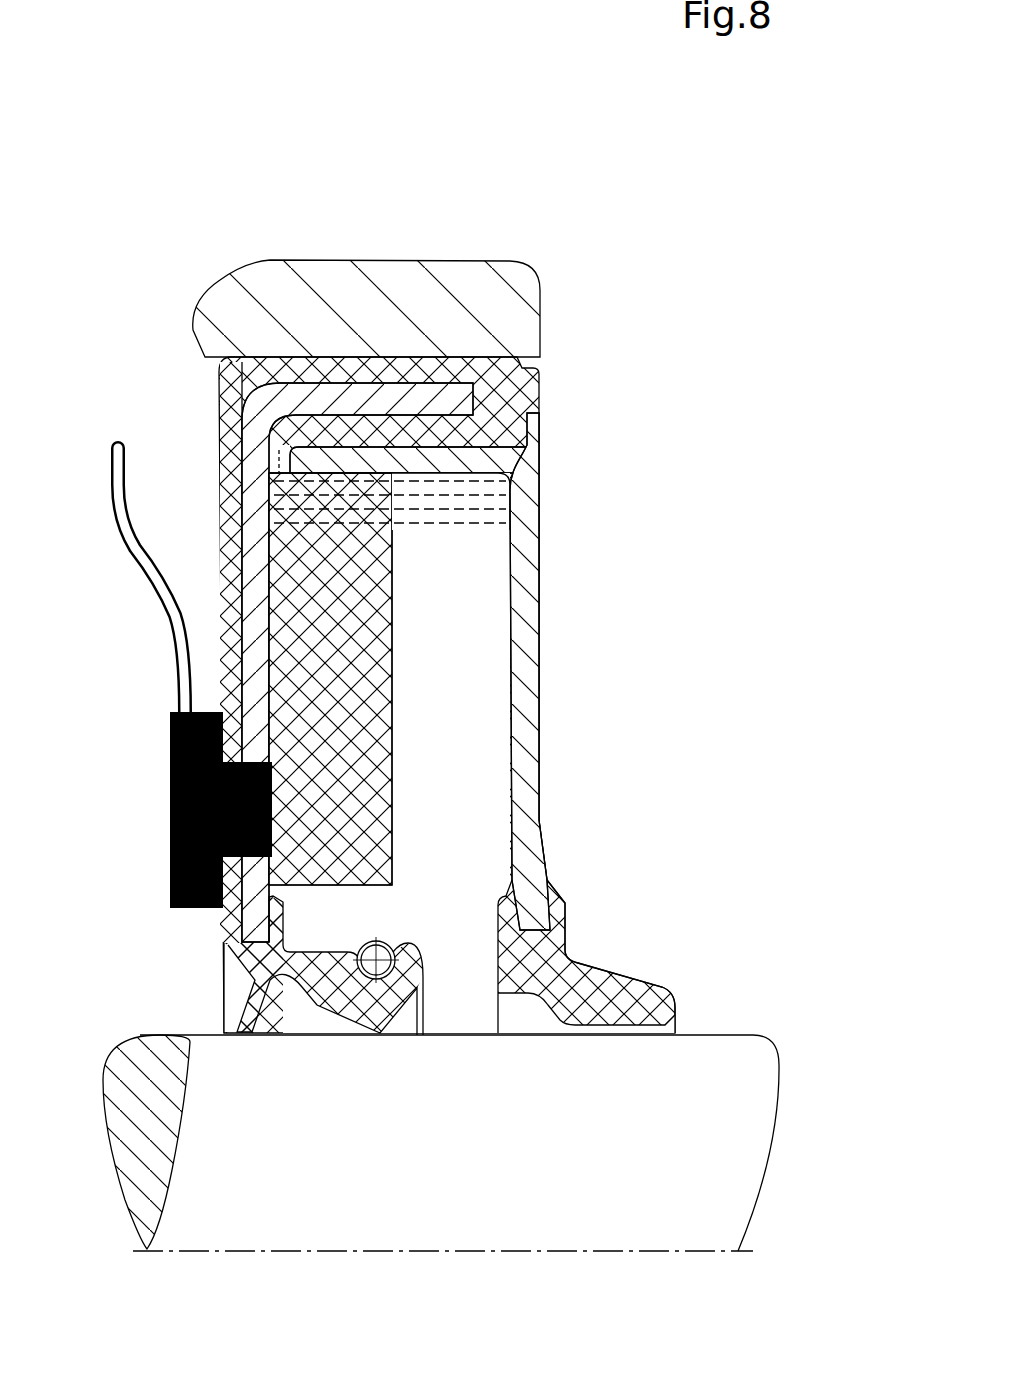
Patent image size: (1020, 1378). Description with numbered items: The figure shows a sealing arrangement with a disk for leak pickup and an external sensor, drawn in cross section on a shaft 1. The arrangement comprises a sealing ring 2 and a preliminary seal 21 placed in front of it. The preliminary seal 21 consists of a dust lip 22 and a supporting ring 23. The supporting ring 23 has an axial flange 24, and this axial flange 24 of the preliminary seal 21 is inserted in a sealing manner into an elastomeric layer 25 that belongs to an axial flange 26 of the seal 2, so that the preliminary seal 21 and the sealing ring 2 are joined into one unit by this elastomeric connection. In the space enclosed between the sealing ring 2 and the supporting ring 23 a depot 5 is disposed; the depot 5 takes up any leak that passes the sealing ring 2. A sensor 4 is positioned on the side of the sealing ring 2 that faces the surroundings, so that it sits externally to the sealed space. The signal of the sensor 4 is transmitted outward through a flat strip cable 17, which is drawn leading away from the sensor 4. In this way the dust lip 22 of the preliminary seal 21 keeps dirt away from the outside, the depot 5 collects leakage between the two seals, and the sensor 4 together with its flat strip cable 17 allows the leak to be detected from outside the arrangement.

The shaft 1 is at (460, 1204).
The sealing ring 2 is at (346, 1030).
The sensor 4 is at (170, 838).
The depot 5 is at (352, 590).
The flat strip cable 17 is at (145, 573).
The preliminary seal 21 is at (477, 596).
The dust lip 22 is at (593, 1000).
The supporting ring 23 is at (523, 717).
The axial flange 24 is at (457, 460).
The elastomeric layer 25 is at (503, 420).
The axial flange 26 is at (388, 397).